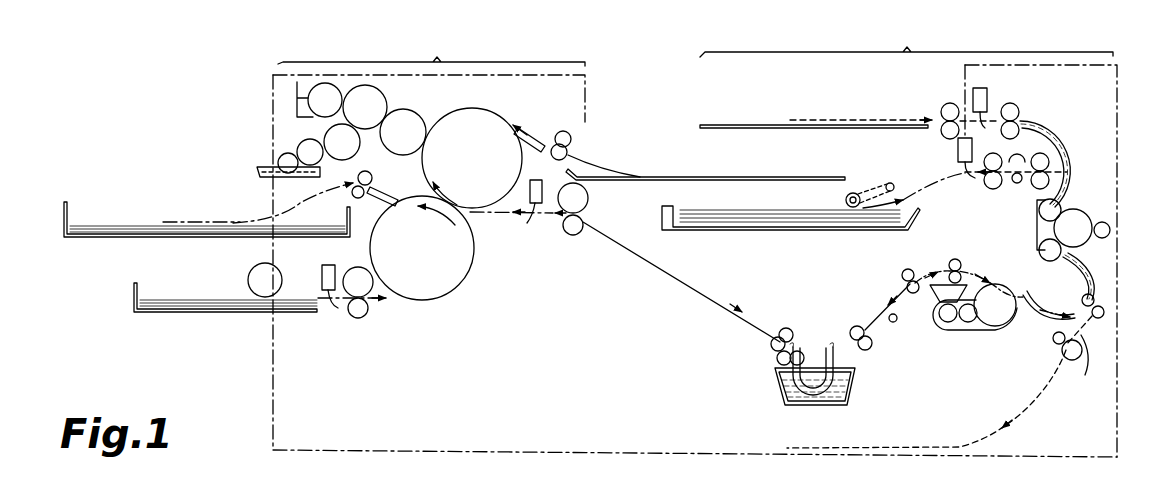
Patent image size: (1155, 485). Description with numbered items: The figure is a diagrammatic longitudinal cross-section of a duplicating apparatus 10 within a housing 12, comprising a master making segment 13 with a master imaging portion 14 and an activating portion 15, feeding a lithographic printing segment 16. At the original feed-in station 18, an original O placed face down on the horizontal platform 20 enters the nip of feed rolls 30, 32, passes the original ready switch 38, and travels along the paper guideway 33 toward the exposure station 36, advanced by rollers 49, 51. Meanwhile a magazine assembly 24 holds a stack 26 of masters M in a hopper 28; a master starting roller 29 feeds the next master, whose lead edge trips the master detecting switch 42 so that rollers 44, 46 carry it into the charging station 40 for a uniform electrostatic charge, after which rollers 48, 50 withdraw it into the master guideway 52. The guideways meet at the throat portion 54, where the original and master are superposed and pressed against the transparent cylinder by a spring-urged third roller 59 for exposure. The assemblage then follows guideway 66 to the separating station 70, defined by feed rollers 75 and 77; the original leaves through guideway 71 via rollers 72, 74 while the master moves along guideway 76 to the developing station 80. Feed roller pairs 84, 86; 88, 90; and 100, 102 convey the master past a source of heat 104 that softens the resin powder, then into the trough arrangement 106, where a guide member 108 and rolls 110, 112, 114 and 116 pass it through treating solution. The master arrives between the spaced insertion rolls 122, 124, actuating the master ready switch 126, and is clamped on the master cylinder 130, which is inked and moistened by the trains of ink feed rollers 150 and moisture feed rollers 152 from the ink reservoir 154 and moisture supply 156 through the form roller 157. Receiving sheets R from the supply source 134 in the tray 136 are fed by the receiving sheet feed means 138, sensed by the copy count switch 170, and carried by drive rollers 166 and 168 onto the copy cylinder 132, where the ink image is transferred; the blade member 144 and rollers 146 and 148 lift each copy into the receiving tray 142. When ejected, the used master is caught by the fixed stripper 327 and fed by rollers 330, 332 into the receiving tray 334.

The duplicating apparatus 10 is at (605, 463).
The housing 12 is at (672, 455).
The master making segment 13 is at (908, 242).
The master imaging portion 14 is at (1086, 206).
The activating portion 15 is at (860, 300).
The lithographic printing segment 16 is at (429, 242).
The original feed-in station 18 is at (835, 110).
The platform 20 is at (760, 129).
The magazine assembly 24 is at (792, 199).
The stack 26 is at (917, 220).
The hopper 28 is at (677, 231).
The master starting roller 29 is at (858, 193).
The feed roll 30 is at (952, 102).
The feed roll 32 is at (942, 131).
The paper guideway 33 is at (1030, 120).
The exposure station 36 is at (1030, 234).
The original ready switch 38 is at (983, 92).
The charging station 40 is at (1028, 148).
The master detecting switch 42 is at (958, 146).
The roller 44 is at (990, 153).
The roller 46 is at (986, 184).
The roller 48 is at (1050, 158).
The roller 49 is at (1018, 104).
The roller 50 is at (1019, 184).
The roller 51 is at (989, 111).
The master guideway 52 is at (1047, 192).
The throat portion 54 is at (1070, 202).
The third roller 59 is at (1105, 225).
The guideway 66 is at (1100, 296).
The separating station 70 is at (1100, 328).
The guideway 71 is at (1094, 358).
The roller 72 is at (1052, 338).
The roller 74 is at (1066, 360).
The feed roller 75 is at (1082, 300).
The guideway 76 is at (1033, 303).
The feed roller 77 is at (1104, 313).
The developing station 80 is at (967, 334).
The feed roller 84 is at (957, 259).
The feed roller 86 is at (962, 274).
The feed roller 88 is at (908, 268).
The feed roller 90 is at (897, 318).
The feed roller 100 is at (851, 331).
The feed roller 102 is at (868, 350).
The source of heat 104 is at (910, 292).
The trough arrangement 106 is at (842, 405).
The guide member 108 is at (814, 395).
The roll 110 is at (799, 352).
The roll 112 is at (777, 358).
The roll 114 is at (787, 328).
The roll 116 is at (771, 343).
The insertion roll 122 is at (588, 200).
The insertion roll 124 is at (578, 233).
The master ready switch 126 is at (550, 172).
The master cylinder 130 is at (478, 110).
The copy cylinder 132 is at (467, 272).
The supply source 134 is at (122, 295).
The tray 136 is at (207, 313).
The receiving sheet feed means 138 is at (250, 273).
The receiving tray 142 is at (120, 240).
The blade member 144 is at (383, 203).
The roller 146 is at (371, 175).
The roller 148 is at (351, 194).
The ink feed rollers 150 is at (343, 83).
The moisture feed rollers 152 is at (290, 130).
The ink reservoir 154 is at (305, 98).
The moisture supply 156 is at (268, 180).
The form roller 157 is at (410, 115).
The drive roller 166 is at (372, 279).
The drive roller 168 is at (366, 314).
The copy count switch 170 is at (330, 264).
The stripper 327 is at (528, 132).
The feed roller 330 is at (571, 136).
The feed roller 332 is at (572, 152).
The receiving tray 334 is at (707, 176).
The master M is at (722, 207).
The original O is at (900, 118).
The receiving sheet R is at (220, 298).